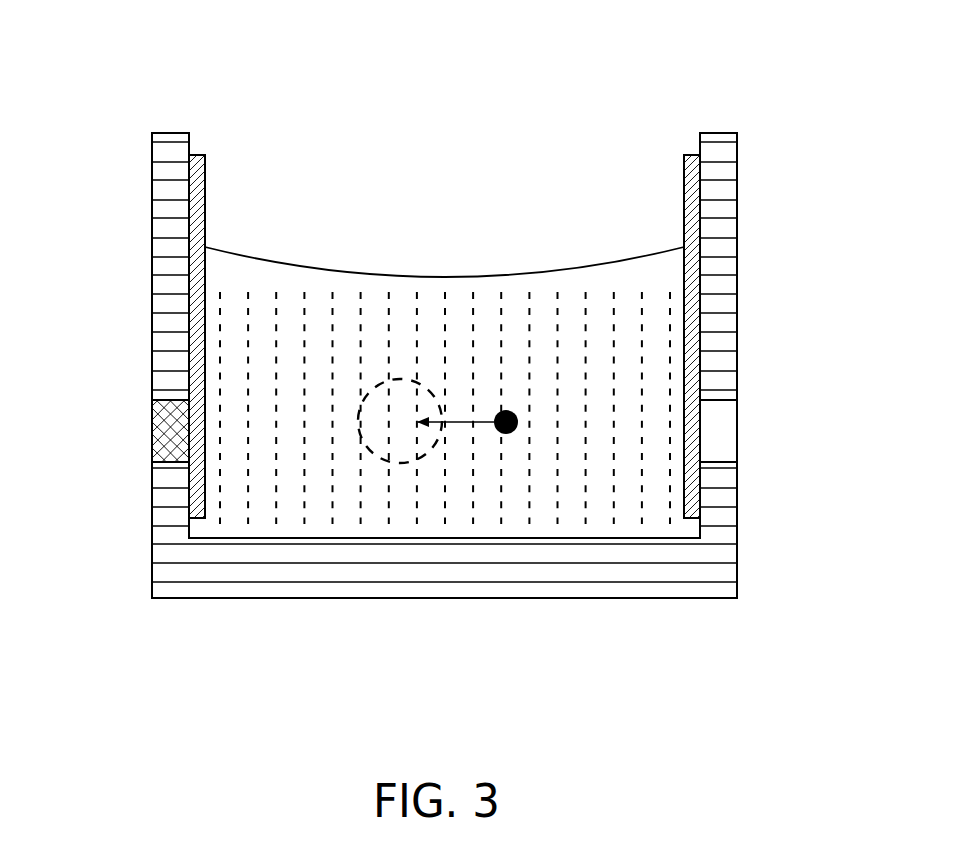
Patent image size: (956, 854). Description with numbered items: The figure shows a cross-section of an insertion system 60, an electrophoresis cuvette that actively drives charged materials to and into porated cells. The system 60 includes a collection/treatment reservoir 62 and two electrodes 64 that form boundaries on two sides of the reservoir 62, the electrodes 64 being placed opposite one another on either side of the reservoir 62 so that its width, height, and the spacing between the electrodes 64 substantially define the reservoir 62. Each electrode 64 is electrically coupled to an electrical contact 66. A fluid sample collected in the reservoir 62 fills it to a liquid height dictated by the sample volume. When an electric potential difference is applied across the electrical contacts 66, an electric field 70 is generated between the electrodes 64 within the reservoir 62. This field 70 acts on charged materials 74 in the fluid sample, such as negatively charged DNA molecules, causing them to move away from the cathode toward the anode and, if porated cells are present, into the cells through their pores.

The insertion system 60 is at (118, 68).
The collection/treatment reservoir 62 is at (482, 325).
The electrodes 64 is at (684, 220).
The electrical contact 66 is at (737, 435).
The electric field 70 is at (615, 367).
The charged materials 74 is at (517, 435).